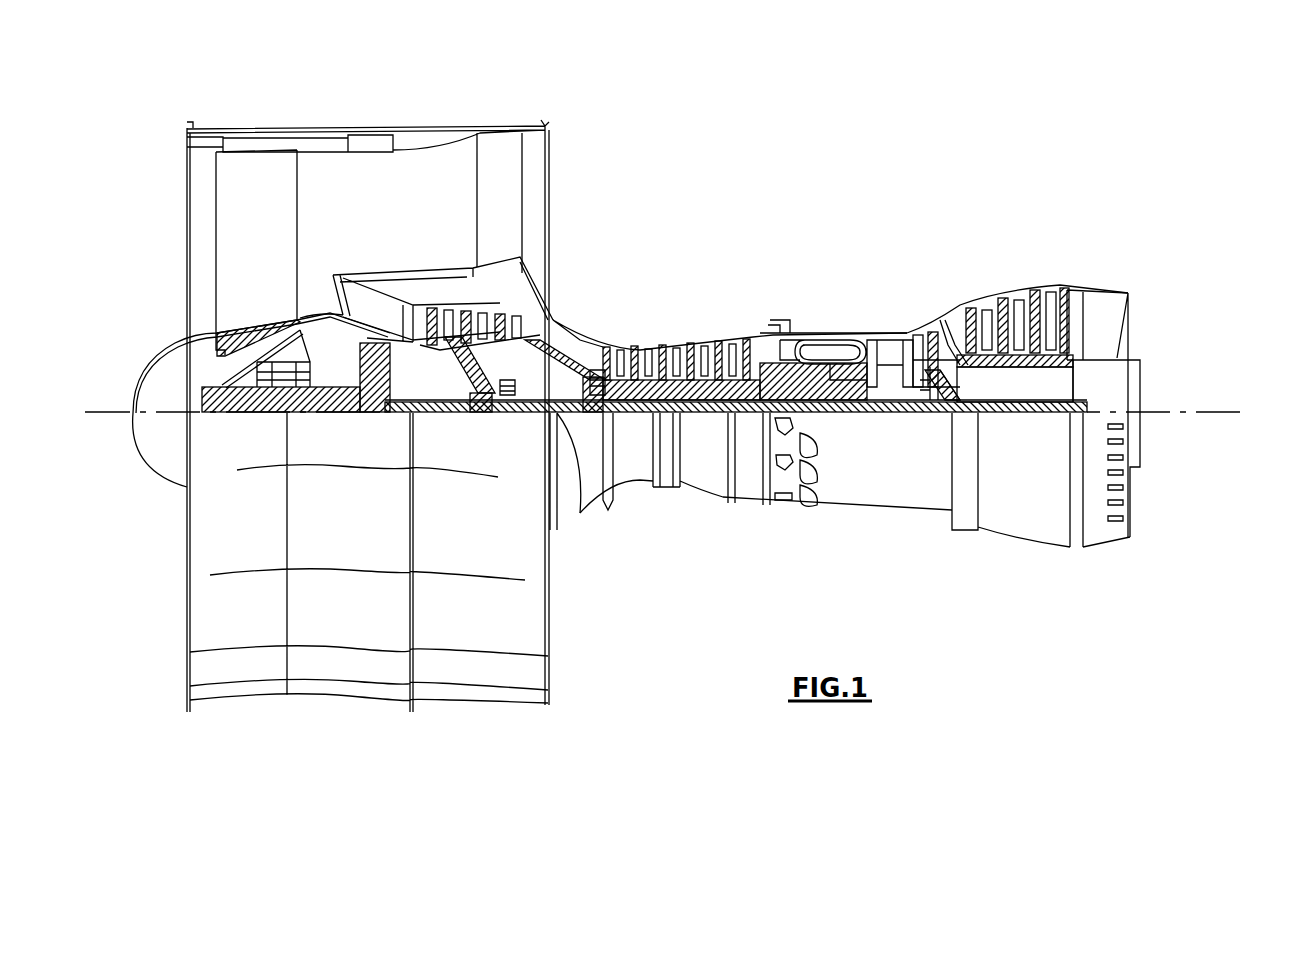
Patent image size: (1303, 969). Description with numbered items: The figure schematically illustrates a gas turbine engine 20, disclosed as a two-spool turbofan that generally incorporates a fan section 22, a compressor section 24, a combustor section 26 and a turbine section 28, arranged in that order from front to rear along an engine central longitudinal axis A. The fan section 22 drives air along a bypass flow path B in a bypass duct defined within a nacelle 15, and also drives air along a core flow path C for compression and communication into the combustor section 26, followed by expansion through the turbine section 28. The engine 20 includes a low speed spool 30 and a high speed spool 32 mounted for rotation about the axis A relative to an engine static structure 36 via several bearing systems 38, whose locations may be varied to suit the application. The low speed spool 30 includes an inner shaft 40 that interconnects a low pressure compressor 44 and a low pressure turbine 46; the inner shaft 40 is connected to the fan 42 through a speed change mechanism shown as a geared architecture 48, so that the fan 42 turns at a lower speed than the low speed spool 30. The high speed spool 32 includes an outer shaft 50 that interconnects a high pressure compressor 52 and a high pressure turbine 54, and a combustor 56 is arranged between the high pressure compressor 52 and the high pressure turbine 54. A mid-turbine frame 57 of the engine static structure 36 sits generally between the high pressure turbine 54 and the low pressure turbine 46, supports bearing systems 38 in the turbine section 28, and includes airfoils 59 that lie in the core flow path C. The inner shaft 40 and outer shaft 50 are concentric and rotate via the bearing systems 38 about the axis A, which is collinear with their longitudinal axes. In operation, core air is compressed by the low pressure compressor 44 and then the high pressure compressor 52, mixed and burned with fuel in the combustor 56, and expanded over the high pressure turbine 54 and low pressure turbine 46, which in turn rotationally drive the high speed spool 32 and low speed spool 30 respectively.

The nacelle 15 is at (370, 135).
The gas turbine engine 20 is at (827, 180).
The fan section 22 is at (300, 120).
The compressor section 24 is at (600, 320).
The combustor section 26 is at (823, 308).
The turbine section 28 is at (968, 275).
The low speed spool 30 is at (706, 418).
The high speed spool 32 is at (753, 363).
The engine static structure 36 is at (746, 500).
The bearing systems 38 is at (497, 412).
The inner shaft 40 is at (575, 505).
The fan 42 is at (271, 259).
The low pressure compressor 44 is at (470, 320).
The low pressure turbine 46 is at (1018, 320).
The geared architecture 48 is at (365, 412).
The outer shaft 50 is at (823, 390).
The high pressure compressor 52 is at (680, 363).
The high pressure turbine 54 is at (893, 340).
The combustor 56 is at (822, 350).
The mid-turbine frame 57 is at (930, 322).
The airfoils 59 is at (960, 370).
The engine central longitudinal axis A is at (1220, 412).
The bypass flow path B is at (330, 205).
The core flow path C is at (372, 311).